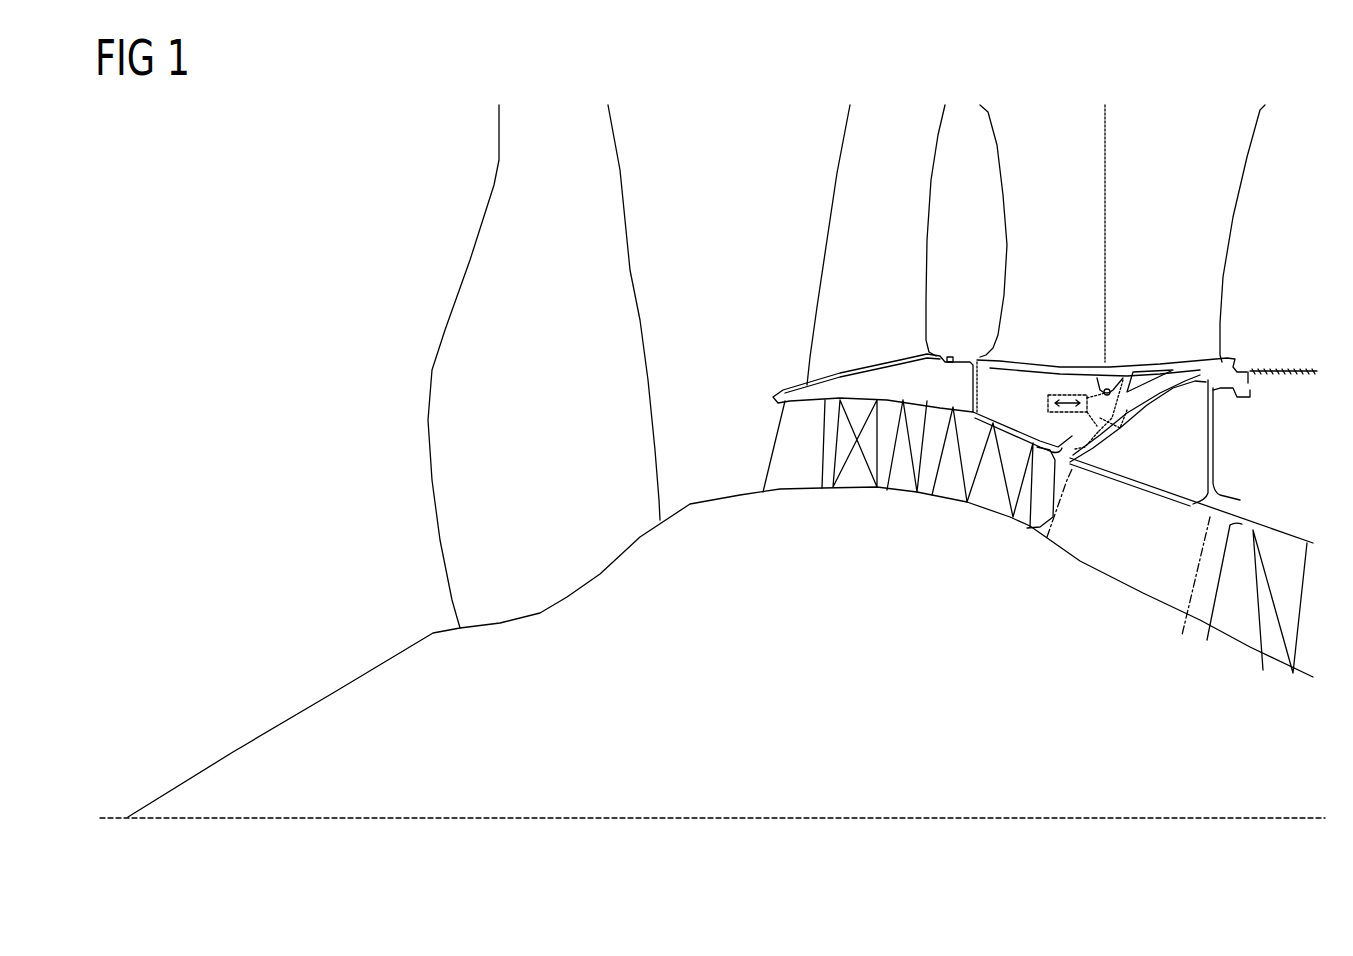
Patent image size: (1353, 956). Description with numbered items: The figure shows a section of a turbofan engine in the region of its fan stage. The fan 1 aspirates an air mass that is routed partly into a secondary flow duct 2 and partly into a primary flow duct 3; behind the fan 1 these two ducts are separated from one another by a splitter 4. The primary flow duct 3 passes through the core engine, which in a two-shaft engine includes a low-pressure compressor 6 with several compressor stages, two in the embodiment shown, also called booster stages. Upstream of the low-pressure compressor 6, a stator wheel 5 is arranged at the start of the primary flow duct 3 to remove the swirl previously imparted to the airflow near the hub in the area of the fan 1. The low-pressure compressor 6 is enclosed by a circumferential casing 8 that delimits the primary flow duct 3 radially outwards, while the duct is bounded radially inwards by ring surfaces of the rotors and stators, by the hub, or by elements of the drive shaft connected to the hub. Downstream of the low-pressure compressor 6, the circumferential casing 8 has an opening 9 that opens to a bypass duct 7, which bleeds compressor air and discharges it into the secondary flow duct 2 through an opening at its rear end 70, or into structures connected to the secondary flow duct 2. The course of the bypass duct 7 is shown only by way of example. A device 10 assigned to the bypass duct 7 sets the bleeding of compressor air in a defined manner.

The fan 1 is at (633, 270).
The secondary flow duct 2 is at (1179, 241).
The primary flow duct 3 is at (1157, 546).
The splitter 4 is at (775, 392).
The stator wheel 5 is at (792, 475).
The low-pressure compressor 6 is at (922, 503).
The bypass duct 7 is at (1176, 378).
The circumferential casing 8 is at (980, 418).
The opening 9 is at (1063, 453).
The device 10 is at (1063, 390).
The rear end 70 is at (1243, 361).